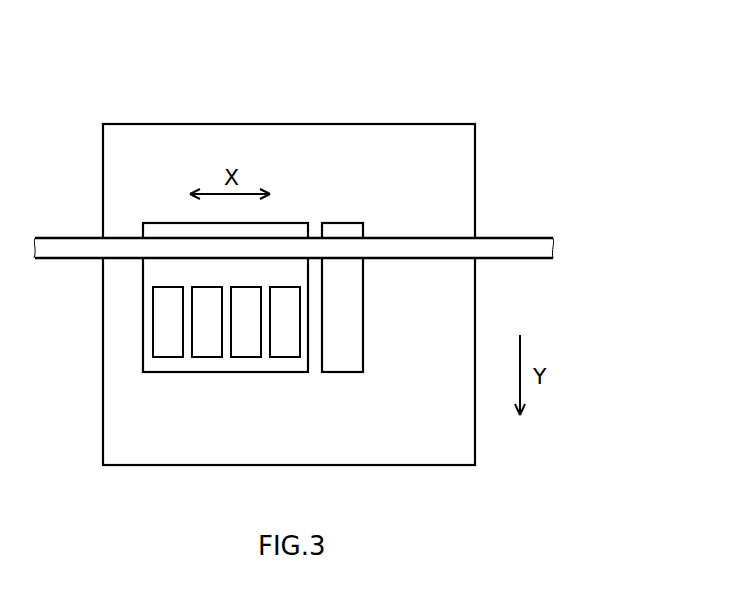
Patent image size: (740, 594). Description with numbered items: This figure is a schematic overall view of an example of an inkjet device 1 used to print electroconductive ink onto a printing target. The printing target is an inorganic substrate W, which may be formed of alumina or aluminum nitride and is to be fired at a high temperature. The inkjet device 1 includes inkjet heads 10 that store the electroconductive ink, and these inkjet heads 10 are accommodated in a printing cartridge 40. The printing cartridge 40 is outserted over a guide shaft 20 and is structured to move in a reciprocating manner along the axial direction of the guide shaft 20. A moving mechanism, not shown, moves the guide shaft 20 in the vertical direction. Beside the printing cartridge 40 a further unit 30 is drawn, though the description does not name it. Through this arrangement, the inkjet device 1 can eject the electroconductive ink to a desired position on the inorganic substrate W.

The inkjet device 1 is at (498, 73).
The inorganic substrate W is at (462, 146).
The guide shaft 20 is at (514, 245).
The printing cartridge 40 is at (288, 229).
The maintenance unit 30 is at (357, 302).
The inkjet heads 10 is at (207, 357).